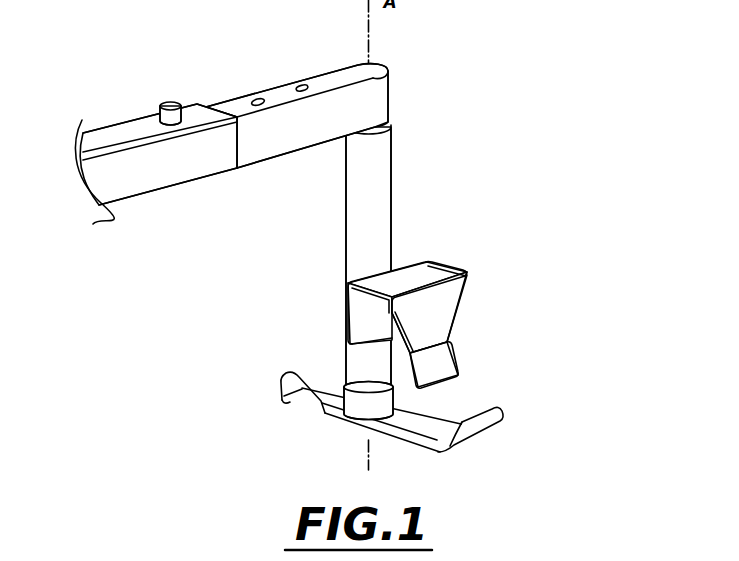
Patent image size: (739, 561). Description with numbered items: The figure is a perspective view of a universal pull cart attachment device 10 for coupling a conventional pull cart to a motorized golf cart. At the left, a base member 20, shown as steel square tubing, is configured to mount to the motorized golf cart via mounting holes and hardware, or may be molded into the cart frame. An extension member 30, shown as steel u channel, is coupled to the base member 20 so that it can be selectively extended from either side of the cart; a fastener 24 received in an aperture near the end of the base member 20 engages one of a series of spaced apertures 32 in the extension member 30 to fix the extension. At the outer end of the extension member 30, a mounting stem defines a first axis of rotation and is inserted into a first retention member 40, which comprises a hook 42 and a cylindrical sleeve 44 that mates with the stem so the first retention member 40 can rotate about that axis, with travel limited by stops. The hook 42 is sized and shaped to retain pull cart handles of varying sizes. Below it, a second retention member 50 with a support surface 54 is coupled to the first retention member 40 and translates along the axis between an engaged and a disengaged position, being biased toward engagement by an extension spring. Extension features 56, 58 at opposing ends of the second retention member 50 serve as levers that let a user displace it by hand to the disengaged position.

The attachment device 10 is at (571, 90).
The base member 20 is at (156, 147).
The fastener 24 is at (163, 103).
The extension member 30 is at (290, 87).
The spaced apertures 32 is at (302, 86).
The first retention member 40 is at (465, 190).
The hook 42 is at (458, 288).
The cylindrical sleeve 44 is at (380, 152).
The second retention member 50 is at (238, 378).
The support surface 54 is at (426, 432).
The extension feature 56 is at (286, 382).
The extension feature 58 is at (493, 423).